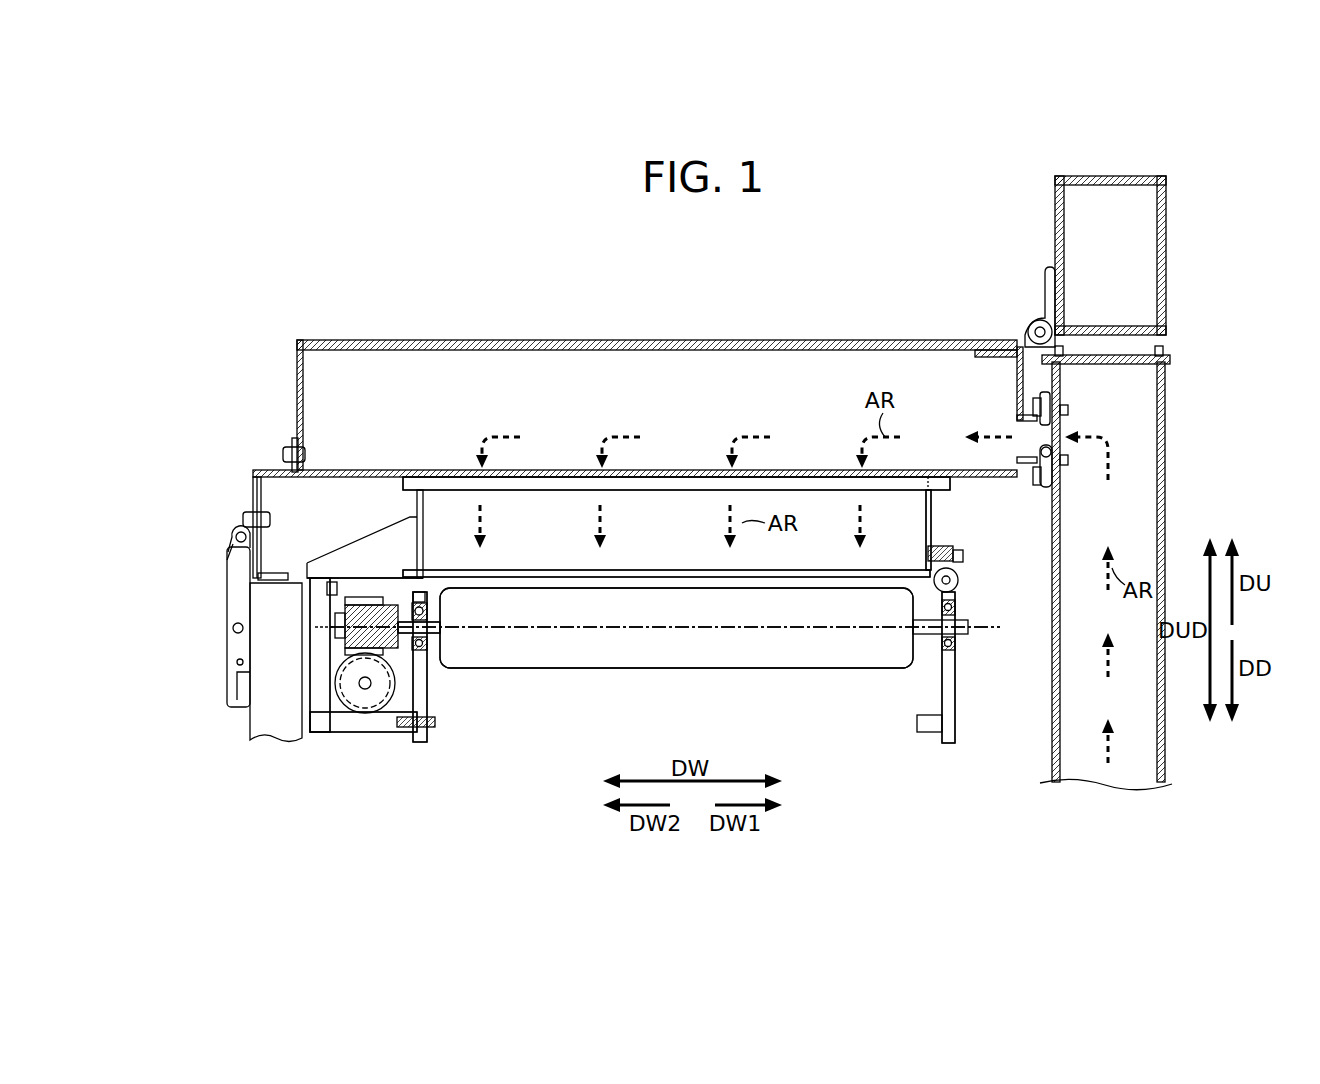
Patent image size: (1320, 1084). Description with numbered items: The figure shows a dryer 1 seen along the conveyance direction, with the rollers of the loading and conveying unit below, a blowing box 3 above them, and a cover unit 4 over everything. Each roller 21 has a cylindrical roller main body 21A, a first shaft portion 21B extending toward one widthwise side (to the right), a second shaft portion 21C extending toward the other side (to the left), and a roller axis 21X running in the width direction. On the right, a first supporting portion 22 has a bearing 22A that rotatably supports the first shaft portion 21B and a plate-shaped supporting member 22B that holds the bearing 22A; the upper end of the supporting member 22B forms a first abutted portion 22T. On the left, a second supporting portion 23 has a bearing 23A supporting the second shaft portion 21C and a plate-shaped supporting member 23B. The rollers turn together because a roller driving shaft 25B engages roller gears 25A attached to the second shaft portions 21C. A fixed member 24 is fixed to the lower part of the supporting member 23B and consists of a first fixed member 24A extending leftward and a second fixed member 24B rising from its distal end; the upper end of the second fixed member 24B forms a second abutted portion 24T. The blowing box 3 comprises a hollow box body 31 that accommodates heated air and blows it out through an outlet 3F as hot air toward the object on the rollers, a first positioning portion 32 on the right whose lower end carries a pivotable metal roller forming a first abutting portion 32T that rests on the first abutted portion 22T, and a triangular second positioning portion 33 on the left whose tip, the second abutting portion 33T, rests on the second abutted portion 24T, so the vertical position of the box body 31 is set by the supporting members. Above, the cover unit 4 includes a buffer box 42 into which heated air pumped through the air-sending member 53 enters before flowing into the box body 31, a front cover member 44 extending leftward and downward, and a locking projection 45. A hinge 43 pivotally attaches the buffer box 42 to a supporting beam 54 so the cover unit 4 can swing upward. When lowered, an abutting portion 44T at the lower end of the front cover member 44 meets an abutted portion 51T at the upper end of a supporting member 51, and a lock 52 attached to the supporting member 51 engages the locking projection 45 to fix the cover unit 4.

The dryer 1 is at (358, 264).
The blowing box 3 is at (547, 497).
The outlet 3F is at (660, 575).
The cover unit 4 is at (445, 372).
The buffer box 42 is at (667, 345).
The hinge 43 is at (1046, 303).
The front cover member 44 is at (262, 470).
The abutting portion 44T is at (262, 512).
The locking projection 45 is at (240, 528).
The supporting member 51 is at (263, 635).
The abutted portion 51T is at (225, 570).
The lock 52 is at (237, 603).
The air-sending member 53 is at (1165, 490).
The supporting beam 54 is at (1166, 267).
The roller 21 is at (575, 658).
The roller main body 21A is at (637, 655).
The first shaft portion 21B is at (922, 622).
The second shaft portion 21C is at (405, 612).
The roller axis 21X is at (700, 630).
The first supporting portion 22 is at (940, 792).
The bearing 22A is at (880, 668).
The supporting member 22B is at (945, 695).
The first abutted portion 22T is at (962, 592).
The second supporting portion 23 is at (450, 790).
The bearing 23A is at (427, 647).
The supporting member 23B is at (425, 690).
The fixed member 24 is at (425, 790).
The first fixed member 24A is at (378, 724).
The second fixed member 24B is at (318, 724).
The second abutted portion 24T is at (317, 590).
The roller gear 25A is at (343, 652).
The roller driving shaft 25B is at (343, 693).
The box body 31 is at (912, 515).
The first positioning portion 32 is at (943, 548).
The first abutting portion 32T is at (962, 577).
The second positioning portion 33 is at (370, 543).
The second abutting portion 33T is at (330, 575).